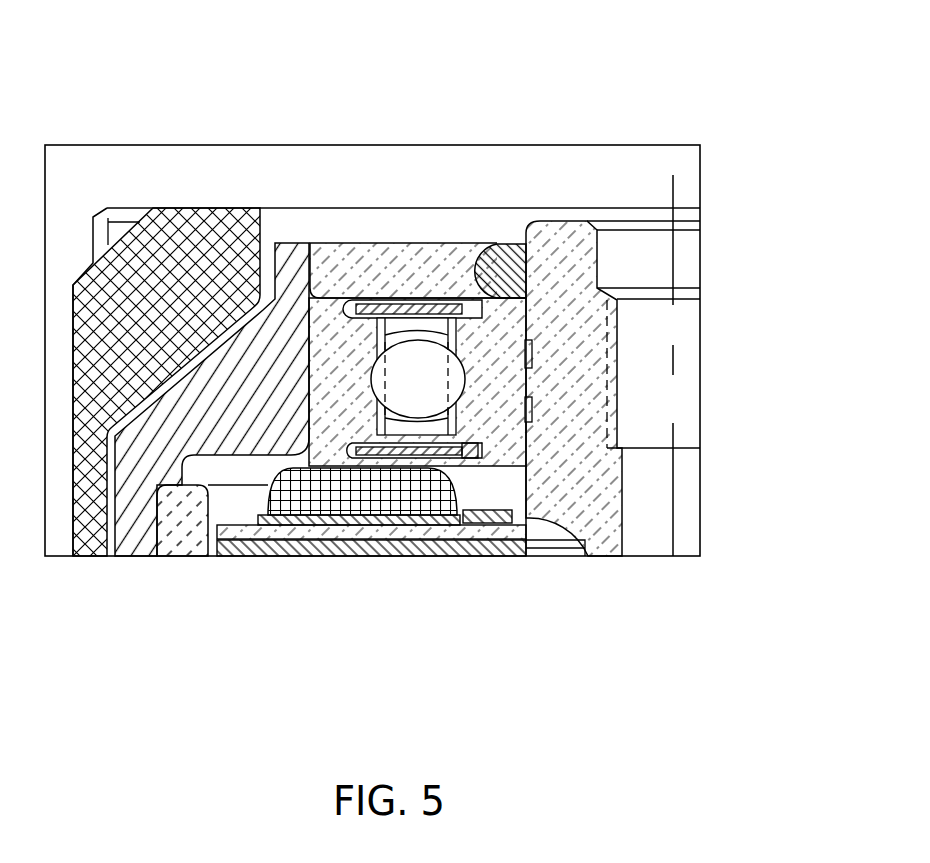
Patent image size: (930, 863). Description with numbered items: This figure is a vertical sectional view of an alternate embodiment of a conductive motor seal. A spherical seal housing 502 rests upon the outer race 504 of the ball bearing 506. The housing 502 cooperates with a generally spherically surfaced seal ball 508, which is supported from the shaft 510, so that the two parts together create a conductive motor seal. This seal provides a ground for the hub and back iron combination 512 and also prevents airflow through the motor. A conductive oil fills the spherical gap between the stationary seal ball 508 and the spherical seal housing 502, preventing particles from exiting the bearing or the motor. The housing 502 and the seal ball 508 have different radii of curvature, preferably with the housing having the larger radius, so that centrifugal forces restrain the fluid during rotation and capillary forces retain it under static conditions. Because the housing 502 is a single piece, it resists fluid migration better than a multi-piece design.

The spherical seal housing 502 is at (408, 268).
The outer race 504 is at (338, 423).
The ball bearing 506 is at (423, 408).
The seal ball 508 is at (497, 272).
The shaft 510 is at (645, 407).
The hub and back iron combination 512 is at (257, 372).